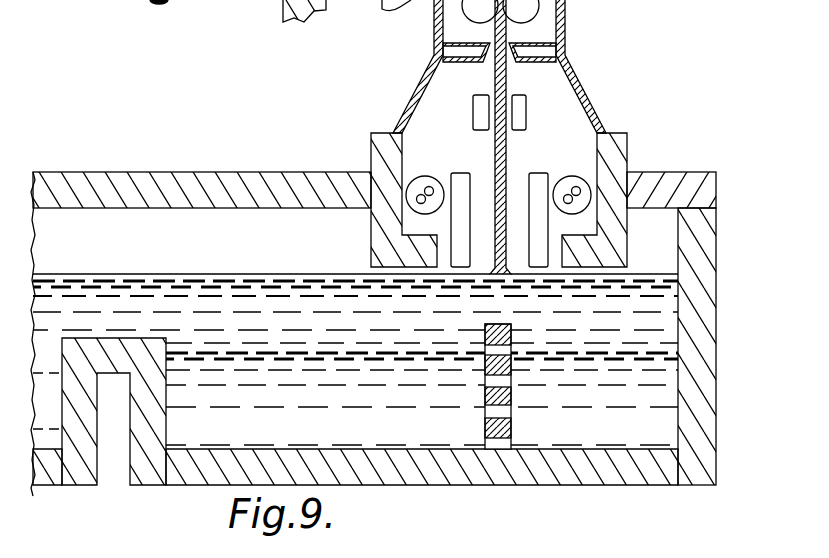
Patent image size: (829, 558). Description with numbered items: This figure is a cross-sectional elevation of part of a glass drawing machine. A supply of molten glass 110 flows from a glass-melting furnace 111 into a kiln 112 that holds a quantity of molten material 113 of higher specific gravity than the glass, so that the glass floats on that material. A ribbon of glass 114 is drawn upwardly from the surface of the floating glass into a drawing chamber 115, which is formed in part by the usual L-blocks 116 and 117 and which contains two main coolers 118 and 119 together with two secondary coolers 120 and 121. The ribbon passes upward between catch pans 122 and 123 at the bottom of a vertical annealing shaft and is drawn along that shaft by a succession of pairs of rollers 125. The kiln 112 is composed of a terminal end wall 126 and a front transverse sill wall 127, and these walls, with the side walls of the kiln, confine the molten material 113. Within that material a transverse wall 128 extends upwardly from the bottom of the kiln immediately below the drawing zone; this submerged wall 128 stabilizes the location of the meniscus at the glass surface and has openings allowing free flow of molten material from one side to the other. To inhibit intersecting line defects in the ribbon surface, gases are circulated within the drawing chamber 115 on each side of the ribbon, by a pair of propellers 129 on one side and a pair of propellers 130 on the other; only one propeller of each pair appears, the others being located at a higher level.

The molten glass 110 is at (390, 334).
The glass-melting furnace 111 is at (98, 246).
The kiln 112 is at (455, 490).
The molten material 113 is at (425, 419).
The ribbon of glass 114 is at (500, 150).
The drawing chamber 115 is at (457, 131).
The L-block 116 is at (393, 163).
The L-block 117 is at (604, 157).
The main cooler 118 is at (461, 195).
The main cooler 119 is at (537, 195).
The secondary cooler 120 is at (481, 110).
The secondary cooler 121 is at (519, 110).
The catch pan 122 is at (478, 52).
The catch pan 123 is at (530, 50).
The rollers 125 is at (528, 2).
The terminal end wall 126 is at (700, 330).
The front transverse sill wall 127 is at (97, 430).
The transverse wall 128 is at (507, 398).
The propellers 129 is at (427, 180).
The propellers 130 is at (573, 180).